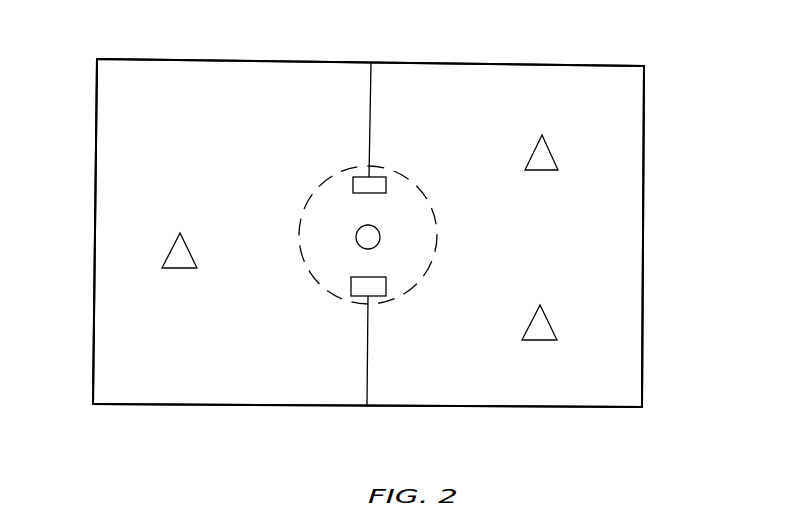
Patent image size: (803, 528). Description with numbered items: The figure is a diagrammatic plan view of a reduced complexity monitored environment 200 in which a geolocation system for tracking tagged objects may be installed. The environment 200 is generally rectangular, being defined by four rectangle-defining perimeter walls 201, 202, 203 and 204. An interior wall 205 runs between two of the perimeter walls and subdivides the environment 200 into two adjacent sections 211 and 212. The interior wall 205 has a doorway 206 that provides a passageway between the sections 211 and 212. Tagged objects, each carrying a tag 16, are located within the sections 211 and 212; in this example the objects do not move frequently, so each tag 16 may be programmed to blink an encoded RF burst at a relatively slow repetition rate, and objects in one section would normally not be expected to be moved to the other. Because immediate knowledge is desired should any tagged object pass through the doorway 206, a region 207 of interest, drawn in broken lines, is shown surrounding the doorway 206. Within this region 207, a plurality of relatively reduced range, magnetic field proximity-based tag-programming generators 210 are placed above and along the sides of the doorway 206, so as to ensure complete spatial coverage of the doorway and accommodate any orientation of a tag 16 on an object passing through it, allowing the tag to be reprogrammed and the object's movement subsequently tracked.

The monitored environment 200 is at (564, 52).
The perimeter wall 201 is at (437, 62).
The perimeter wall 202 is at (95, 253).
The perimeter wall 203 is at (290, 407).
The perimeter wall 204 is at (644, 327).
The interior wall 205 is at (371, 117).
The doorway 206 is at (377, 265).
The region 207 is at (440, 240).
The magnetic field generators 210 is at (350, 185).
The section 211 is at (172, 90).
The section 212 is at (603, 125).
The tags 16 is at (193, 255).